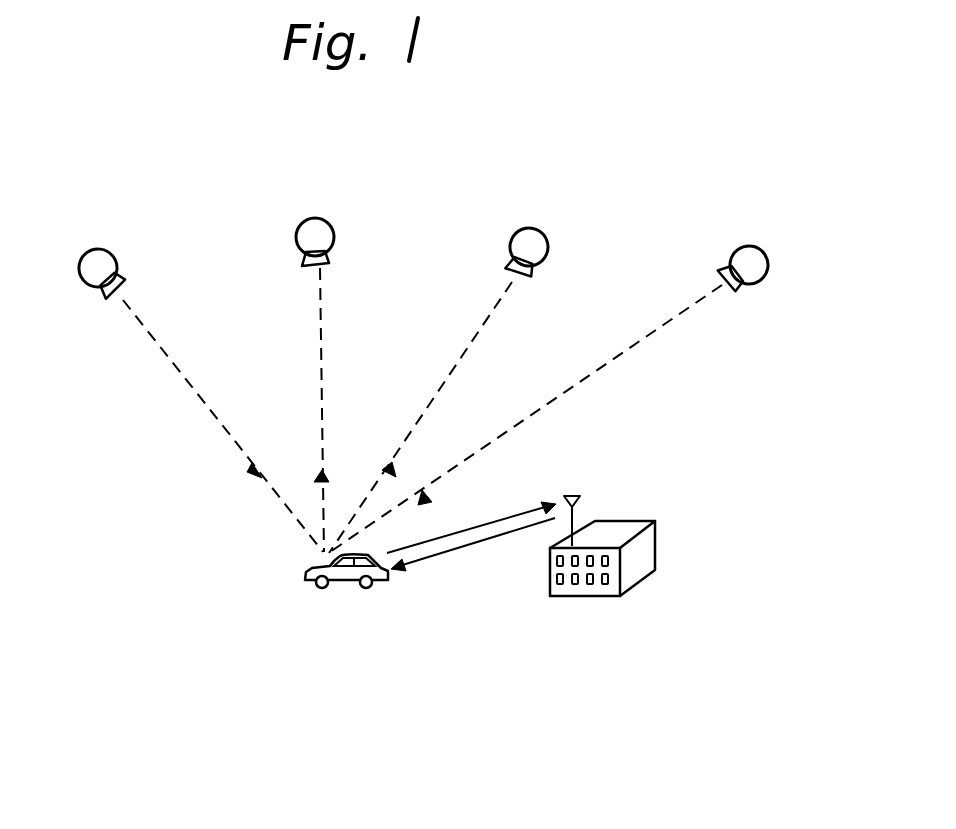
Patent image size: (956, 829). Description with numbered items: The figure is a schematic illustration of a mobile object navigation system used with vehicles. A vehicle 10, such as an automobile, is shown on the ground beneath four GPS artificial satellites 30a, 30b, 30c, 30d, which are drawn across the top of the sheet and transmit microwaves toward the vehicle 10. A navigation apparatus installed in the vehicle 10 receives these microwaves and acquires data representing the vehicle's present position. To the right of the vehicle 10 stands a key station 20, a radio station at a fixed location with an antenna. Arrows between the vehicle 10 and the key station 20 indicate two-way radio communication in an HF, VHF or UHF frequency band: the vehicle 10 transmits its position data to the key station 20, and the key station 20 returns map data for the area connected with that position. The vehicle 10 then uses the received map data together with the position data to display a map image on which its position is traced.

The vehicle 10 is at (342, 589).
The key station 20 is at (623, 530).
The GPS artificial satellite 30a is at (104, 260).
The GPS artificial satellite 30b is at (322, 234).
The GPS artificial satellite 30c is at (534, 236).
The GPS artificial satellite 30d is at (754, 250).